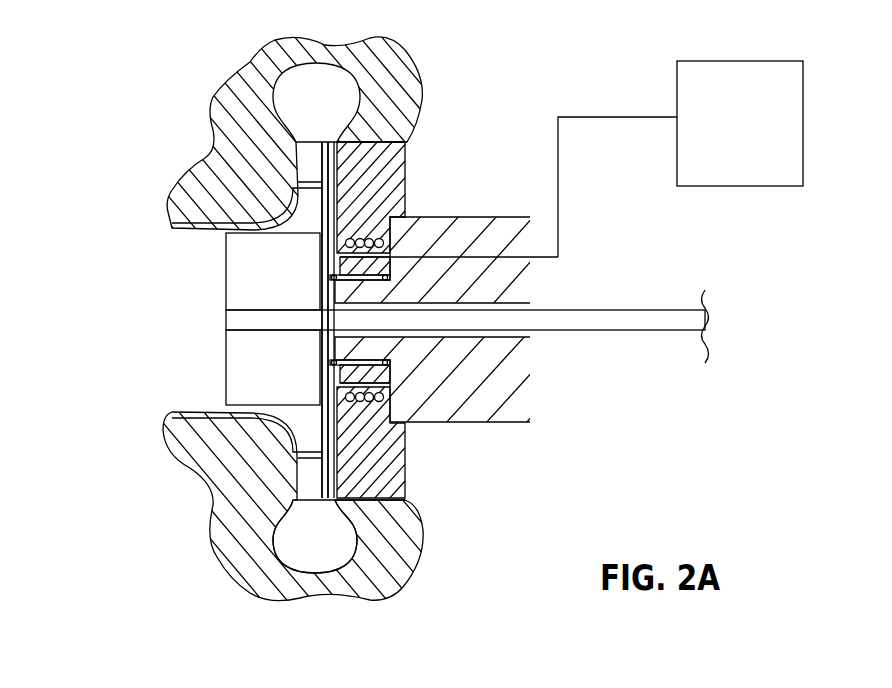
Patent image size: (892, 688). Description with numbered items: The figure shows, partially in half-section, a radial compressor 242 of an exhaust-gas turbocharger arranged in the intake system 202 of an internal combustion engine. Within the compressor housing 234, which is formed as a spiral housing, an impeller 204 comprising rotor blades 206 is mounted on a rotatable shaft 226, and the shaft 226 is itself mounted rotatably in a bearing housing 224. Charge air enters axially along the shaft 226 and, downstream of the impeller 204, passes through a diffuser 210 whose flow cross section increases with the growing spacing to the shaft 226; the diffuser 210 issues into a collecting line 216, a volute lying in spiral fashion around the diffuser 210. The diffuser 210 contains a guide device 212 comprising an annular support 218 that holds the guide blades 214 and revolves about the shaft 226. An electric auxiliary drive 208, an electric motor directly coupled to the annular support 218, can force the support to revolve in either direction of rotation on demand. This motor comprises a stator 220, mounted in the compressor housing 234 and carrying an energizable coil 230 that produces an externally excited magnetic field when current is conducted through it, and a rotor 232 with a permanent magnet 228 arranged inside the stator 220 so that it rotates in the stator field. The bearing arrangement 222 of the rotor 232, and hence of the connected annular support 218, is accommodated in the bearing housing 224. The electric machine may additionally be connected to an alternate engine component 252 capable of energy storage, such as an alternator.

The intake system 202 is at (162, 333).
The impeller 204 is at (284, 291).
The rotor blades 206 is at (284, 373).
The electric auxiliary drive 208 is at (312, 389).
The diffuser 210 is at (256, 523).
The guide device 212 is at (250, 535).
The guide blades 214 is at (172, 222).
The collecting line 216 is at (329, 554).
The annular support 218 is at (407, 512).
The stator 220 is at (360, 399).
The bearing arrangement 222 is at (390, 363).
The bearing housing 224 is at (500, 385).
The shaft 226 is at (590, 318).
The permanent magnet 228 is at (340, 272).
The energizable coil 230 is at (363, 238).
The rotor 232 is at (400, 137).
The compressor housing 234 is at (403, 75).
The compressor 242 is at (124, 121).
The alternate engine component 252 is at (757, 131).